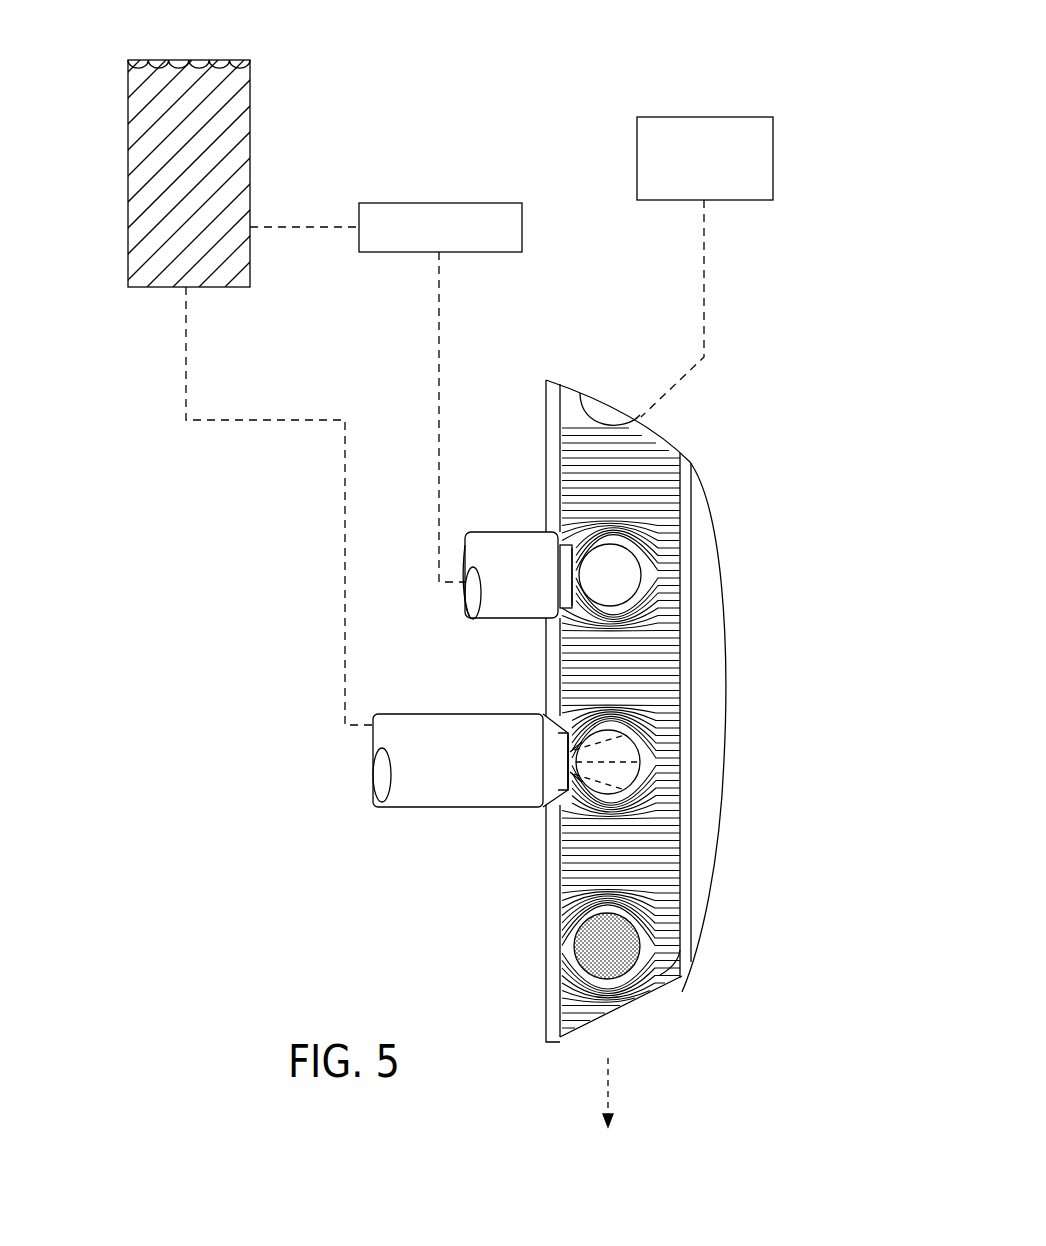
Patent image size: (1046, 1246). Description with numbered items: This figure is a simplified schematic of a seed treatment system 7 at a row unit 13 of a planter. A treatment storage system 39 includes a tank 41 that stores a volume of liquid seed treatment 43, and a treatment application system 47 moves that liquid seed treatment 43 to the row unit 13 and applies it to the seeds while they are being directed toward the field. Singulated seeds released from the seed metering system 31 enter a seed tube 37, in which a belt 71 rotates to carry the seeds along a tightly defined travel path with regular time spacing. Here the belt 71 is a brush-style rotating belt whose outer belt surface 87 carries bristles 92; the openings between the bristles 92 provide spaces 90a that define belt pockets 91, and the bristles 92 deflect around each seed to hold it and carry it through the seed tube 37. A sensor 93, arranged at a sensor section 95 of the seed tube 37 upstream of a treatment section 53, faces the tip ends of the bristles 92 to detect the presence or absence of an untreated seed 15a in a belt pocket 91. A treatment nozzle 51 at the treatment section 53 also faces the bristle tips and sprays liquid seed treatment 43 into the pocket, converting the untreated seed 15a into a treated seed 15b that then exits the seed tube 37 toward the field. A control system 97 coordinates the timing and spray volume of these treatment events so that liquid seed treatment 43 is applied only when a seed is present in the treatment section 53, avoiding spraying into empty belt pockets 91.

The seed treatment system 7 is at (245, 552).
The row unit 13 is at (678, 1093).
The untreated seed 15a is at (625, 570).
The treated seed 15b is at (626, 912).
The seed metering system 31 is at (708, 110).
The seed tube 37 is at (745, 662).
The treatment storage system 39 is at (284, 60).
The tank 41 is at (127, 108).
The liquid seed treatment 43 is at (146, 165).
The treatment application system 47 is at (305, 765).
The treatment nozzle 51 is at (440, 795).
The treatment section 53 is at (520, 830).
The belt 71 is at (697, 610).
The outer belt surface 87 is at (660, 958).
The space 90a is at (587, 605).
The belt pocket 91 is at (570, 595).
The bristles 92 is at (568, 412).
The sensor 93 is at (512, 528).
The sensor section 95 is at (523, 507).
The control system 97 is at (447, 185).